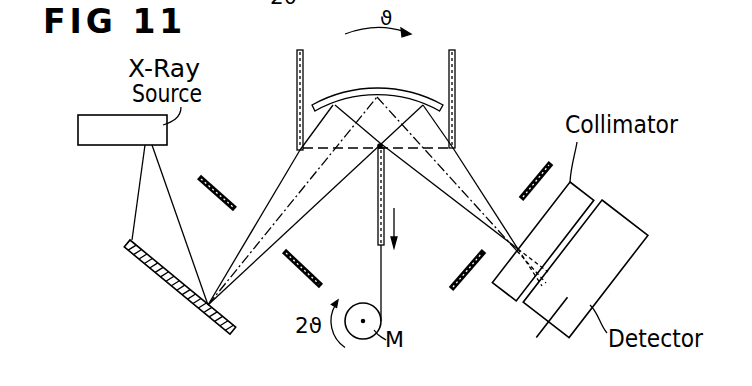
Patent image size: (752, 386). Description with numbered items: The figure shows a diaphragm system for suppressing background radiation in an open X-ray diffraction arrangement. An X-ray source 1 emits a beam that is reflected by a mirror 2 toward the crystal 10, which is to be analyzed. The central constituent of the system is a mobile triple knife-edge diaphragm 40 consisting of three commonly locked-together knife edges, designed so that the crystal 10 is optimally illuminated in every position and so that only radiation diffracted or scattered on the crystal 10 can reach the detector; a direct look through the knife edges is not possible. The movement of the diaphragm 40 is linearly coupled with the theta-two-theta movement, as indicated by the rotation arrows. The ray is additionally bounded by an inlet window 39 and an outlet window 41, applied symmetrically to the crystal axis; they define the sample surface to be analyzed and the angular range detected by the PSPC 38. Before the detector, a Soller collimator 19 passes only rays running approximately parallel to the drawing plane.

The X-ray source 1 is at (100, 130).
The mirror 2 is at (170, 287).
The crystal 10 is at (365, 66).
The Soller collimator 19 is at (580, 190).
The PSPC 38 is at (608, 268).
The inlet window 39 is at (203, 178).
The mobile triple knife-edge diaphragm 40 is at (378, 219).
The outlet window 41 is at (537, 176).